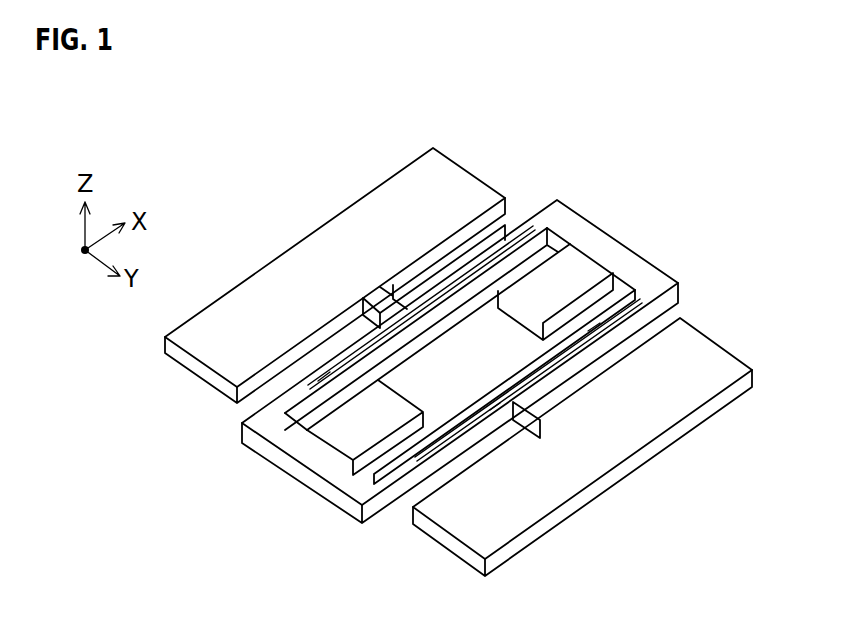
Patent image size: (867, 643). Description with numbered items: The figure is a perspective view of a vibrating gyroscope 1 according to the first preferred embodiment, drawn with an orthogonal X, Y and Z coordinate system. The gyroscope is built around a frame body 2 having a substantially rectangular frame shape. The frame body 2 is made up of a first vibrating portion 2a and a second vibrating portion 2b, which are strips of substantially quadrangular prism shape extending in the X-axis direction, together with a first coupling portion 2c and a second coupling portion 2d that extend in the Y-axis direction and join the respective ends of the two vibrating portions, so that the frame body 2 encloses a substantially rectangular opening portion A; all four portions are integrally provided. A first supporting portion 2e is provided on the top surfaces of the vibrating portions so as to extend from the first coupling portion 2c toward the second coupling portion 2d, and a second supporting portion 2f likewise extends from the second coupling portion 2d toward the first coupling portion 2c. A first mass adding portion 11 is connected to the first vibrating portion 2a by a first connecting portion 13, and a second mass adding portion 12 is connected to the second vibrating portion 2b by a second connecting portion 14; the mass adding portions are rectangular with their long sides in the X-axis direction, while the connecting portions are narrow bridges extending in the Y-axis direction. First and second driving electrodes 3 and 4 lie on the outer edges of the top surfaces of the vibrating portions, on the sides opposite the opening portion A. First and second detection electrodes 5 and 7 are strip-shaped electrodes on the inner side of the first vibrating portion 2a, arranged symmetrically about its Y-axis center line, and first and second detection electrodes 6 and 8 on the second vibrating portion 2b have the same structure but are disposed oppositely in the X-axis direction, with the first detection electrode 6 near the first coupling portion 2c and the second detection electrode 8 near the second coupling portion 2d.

The vibrating gyroscope 1 is at (203, 125).
The frame body 2 is at (247, 458).
The first vibrating portion 2a is at (525, 232).
The second vibrating portion 2b is at (633, 302).
The first coupling portion 2c is at (582, 222).
The second coupling portion 2d is at (348, 480).
The first supporting portion 2e is at (542, 308).
The second supporting portion 2f is at (390, 402).
The first driving electrode 3 is at (370, 340).
The second driving electrode 4 is at (490, 410).
The first detection electrode 5 is at (330, 372).
The first detection electrode 6 is at (588, 331).
The second detection electrode 7 is at (468, 272).
The second detection electrode 8 is at (437, 442).
The first mass adding portion 11 is at (323, 223).
The second mass adding portion 12 is at (665, 455).
The first connecting portion 13 is at (396, 293).
The second connecting portion 14 is at (553, 400).
The opening portion A is at (480, 364).